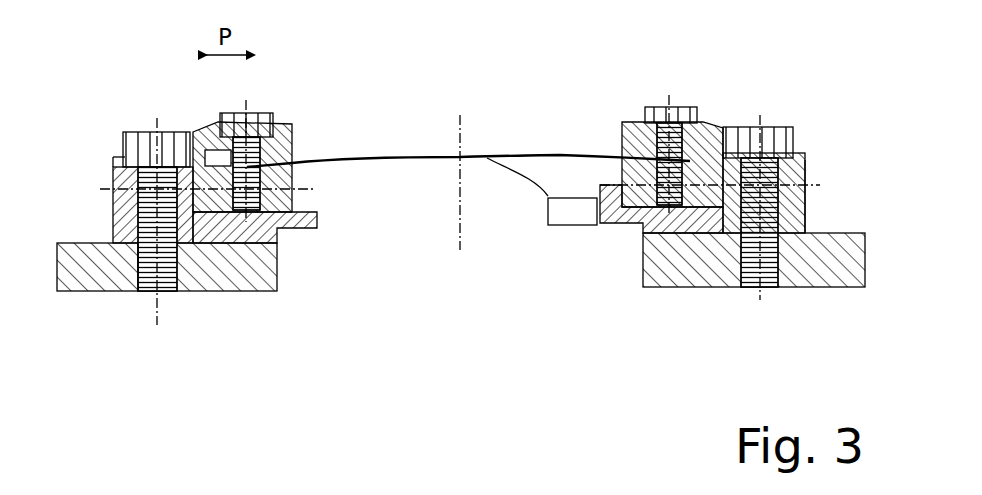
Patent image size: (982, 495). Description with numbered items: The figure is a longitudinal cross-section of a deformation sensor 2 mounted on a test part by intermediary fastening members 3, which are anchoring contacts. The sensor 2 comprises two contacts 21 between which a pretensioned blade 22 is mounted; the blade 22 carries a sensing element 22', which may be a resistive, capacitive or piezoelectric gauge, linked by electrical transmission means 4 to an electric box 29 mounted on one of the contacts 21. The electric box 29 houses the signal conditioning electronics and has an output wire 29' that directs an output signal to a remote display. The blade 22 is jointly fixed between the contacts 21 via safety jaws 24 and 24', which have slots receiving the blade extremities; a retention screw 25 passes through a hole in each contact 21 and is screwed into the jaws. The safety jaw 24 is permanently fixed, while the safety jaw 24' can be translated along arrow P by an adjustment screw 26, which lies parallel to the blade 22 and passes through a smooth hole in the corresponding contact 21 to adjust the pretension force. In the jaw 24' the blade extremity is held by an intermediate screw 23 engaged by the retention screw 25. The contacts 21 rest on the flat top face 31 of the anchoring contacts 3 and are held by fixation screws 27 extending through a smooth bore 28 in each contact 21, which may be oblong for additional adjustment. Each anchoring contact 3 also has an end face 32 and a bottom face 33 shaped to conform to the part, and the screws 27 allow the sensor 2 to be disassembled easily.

The deformation sensor 2 is at (560, 102).
The intermediary fastening members 3 is at (224, 300).
The electrical transmission means 4 is at (520, 162).
The contacts 21 is at (813, 153).
The pretensioned blade 22 is at (510, 107).
The sensing element 22' is at (436, 182).
The intermediate screw 23 is at (291, 135).
The safety jaw 24 is at (657, 107).
The safety jaw 24' is at (283, 117).
The retention screw 25 is at (262, 113).
The adjustment screw 26 is at (113, 167).
The fixation screws 27 is at (172, 134).
The smooth bore 28 is at (795, 203).
The electric box 29 is at (542, 248).
The output wire 29' is at (845, 171).
The top face 31 is at (281, 232).
The end face 32 is at (97, 242).
The bottom face 33 is at (132, 291).